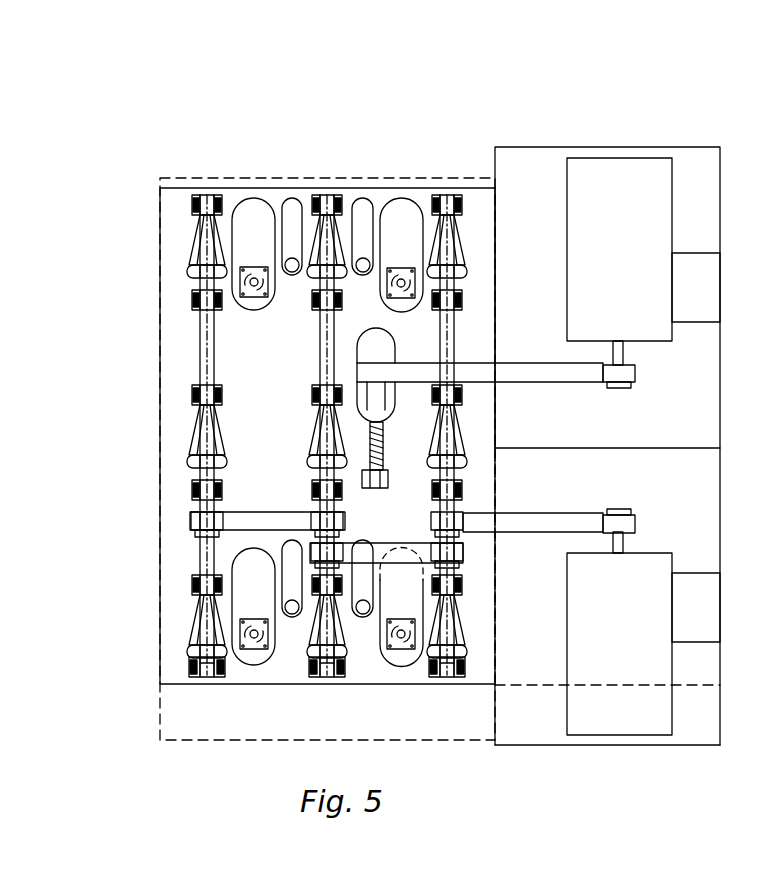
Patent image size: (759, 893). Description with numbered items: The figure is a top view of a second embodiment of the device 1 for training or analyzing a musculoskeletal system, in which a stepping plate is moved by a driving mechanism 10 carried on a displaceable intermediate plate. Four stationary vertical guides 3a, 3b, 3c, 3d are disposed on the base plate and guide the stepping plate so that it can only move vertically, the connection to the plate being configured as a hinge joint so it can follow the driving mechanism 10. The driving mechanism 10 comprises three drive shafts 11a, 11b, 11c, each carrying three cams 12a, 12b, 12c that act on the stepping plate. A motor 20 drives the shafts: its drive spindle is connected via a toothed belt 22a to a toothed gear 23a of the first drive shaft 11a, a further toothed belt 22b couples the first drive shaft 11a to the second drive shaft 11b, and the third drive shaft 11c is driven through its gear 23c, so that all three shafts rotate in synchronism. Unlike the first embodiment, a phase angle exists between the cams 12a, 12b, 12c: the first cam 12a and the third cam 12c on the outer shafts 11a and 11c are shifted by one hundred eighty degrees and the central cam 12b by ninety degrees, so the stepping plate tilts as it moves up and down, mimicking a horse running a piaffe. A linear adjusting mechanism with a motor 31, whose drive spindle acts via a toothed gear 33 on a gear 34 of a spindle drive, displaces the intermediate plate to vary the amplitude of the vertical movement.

The device 1 is at (416, 168).
The driving mechanism 10 is at (262, 364).
The first drive shaft 11a is at (452, 600).
The second drive shaft 11b is at (312, 580).
The third drive shaft 11c is at (205, 552).
The first cam 12a is at (190, 633).
The second cam 12b is at (203, 447).
The third cam 12c is at (190, 270).
The vertical guide 3a is at (253, 637).
The vertical guide 3b is at (400, 637).
The vertical guide 3c is at (400, 222).
The vertical guide 3d is at (254, 222).
The motor 20 is at (625, 637).
The toothed belt 22a is at (530, 520).
The toothed belt 22b is at (258, 525).
The toothed gear 23a is at (440, 527).
The gear 23c is at (195, 522).
The motor 31 is at (625, 282).
The toothed gear 33 is at (510, 373).
The gear 34 is at (394, 358).